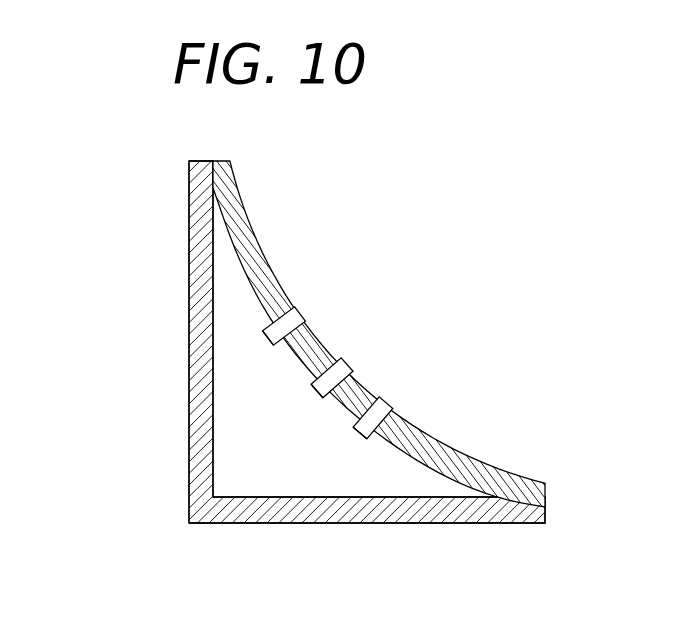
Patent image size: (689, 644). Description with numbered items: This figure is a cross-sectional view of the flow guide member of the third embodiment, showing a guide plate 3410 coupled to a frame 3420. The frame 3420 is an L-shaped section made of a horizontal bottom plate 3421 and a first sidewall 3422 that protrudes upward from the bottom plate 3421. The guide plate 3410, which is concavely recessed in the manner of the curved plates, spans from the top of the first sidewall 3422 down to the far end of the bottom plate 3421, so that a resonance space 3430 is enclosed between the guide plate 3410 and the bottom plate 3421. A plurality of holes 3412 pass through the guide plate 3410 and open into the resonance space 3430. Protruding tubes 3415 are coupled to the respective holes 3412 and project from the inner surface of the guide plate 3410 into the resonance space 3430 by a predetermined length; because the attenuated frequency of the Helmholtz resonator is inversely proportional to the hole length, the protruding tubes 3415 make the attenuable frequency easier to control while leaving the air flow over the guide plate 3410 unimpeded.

The guide plate 3410 is at (235, 205).
The holes 3412 is at (290, 327).
The protruding tubes 3415 is at (277, 343).
The frame 3420 is at (188, 397).
The bottom plate 3421 is at (367, 512).
The first sidewall 3422 is at (207, 317).
The resonance space 3430 is at (287, 422).